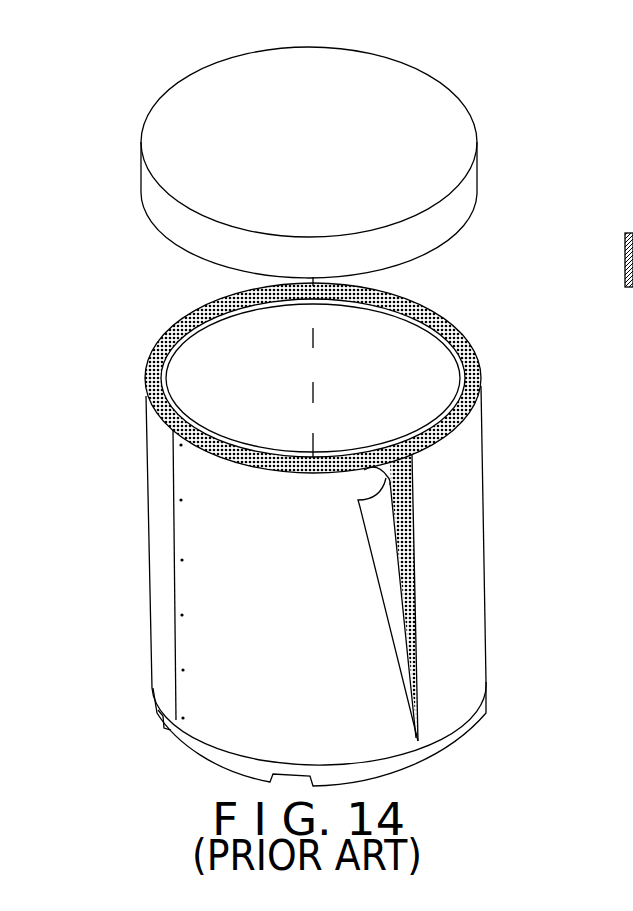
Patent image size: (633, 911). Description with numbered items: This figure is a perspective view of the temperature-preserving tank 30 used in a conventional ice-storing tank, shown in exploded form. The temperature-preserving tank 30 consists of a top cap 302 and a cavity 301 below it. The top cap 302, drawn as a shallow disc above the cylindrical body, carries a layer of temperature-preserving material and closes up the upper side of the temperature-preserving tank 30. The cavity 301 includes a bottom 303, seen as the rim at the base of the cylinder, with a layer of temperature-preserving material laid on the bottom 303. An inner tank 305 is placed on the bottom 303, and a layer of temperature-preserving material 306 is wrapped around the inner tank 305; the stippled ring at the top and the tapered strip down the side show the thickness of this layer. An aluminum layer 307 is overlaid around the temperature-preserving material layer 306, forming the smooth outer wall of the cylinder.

The temperature-preserving tank 30 is at (111, 129).
The cavity 301 is at (566, 757).
The top cap 302 is at (463, 188).
The bottom 303 is at (443, 743).
The inner tank 305 is at (452, 377).
The temperature-preserving material layer 306 is at (413, 486).
The aluminum layer 307 is at (468, 571).